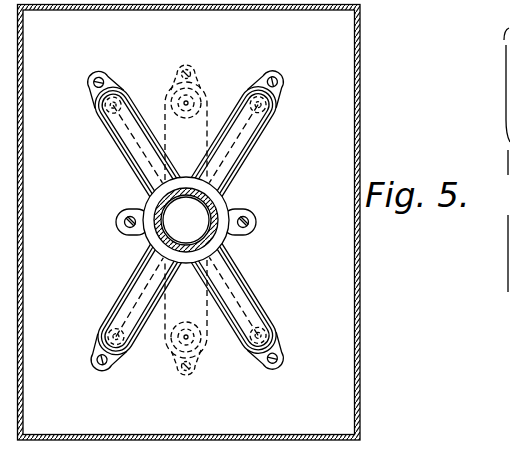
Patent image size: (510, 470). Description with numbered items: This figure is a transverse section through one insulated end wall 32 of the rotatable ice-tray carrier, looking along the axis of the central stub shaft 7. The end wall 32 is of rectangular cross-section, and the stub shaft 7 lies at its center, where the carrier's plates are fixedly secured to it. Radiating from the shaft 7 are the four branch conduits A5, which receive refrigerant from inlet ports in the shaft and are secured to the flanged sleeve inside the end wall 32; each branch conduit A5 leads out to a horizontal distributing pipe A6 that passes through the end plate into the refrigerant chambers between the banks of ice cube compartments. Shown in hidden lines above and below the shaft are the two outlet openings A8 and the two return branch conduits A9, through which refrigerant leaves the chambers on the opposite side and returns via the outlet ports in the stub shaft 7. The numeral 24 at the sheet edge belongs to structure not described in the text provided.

The branch conduits A5 is at (125, 152).
The distributing pipes A6 is at (126, 90).
The outlet openings A8 is at (200, 89).
The branch conduits A9 is at (208, 114).
The stub shaft 7 is at (206, 217).
The insulated end wall 32 is at (362, 127).
The frame member 24 is at (452, 20).